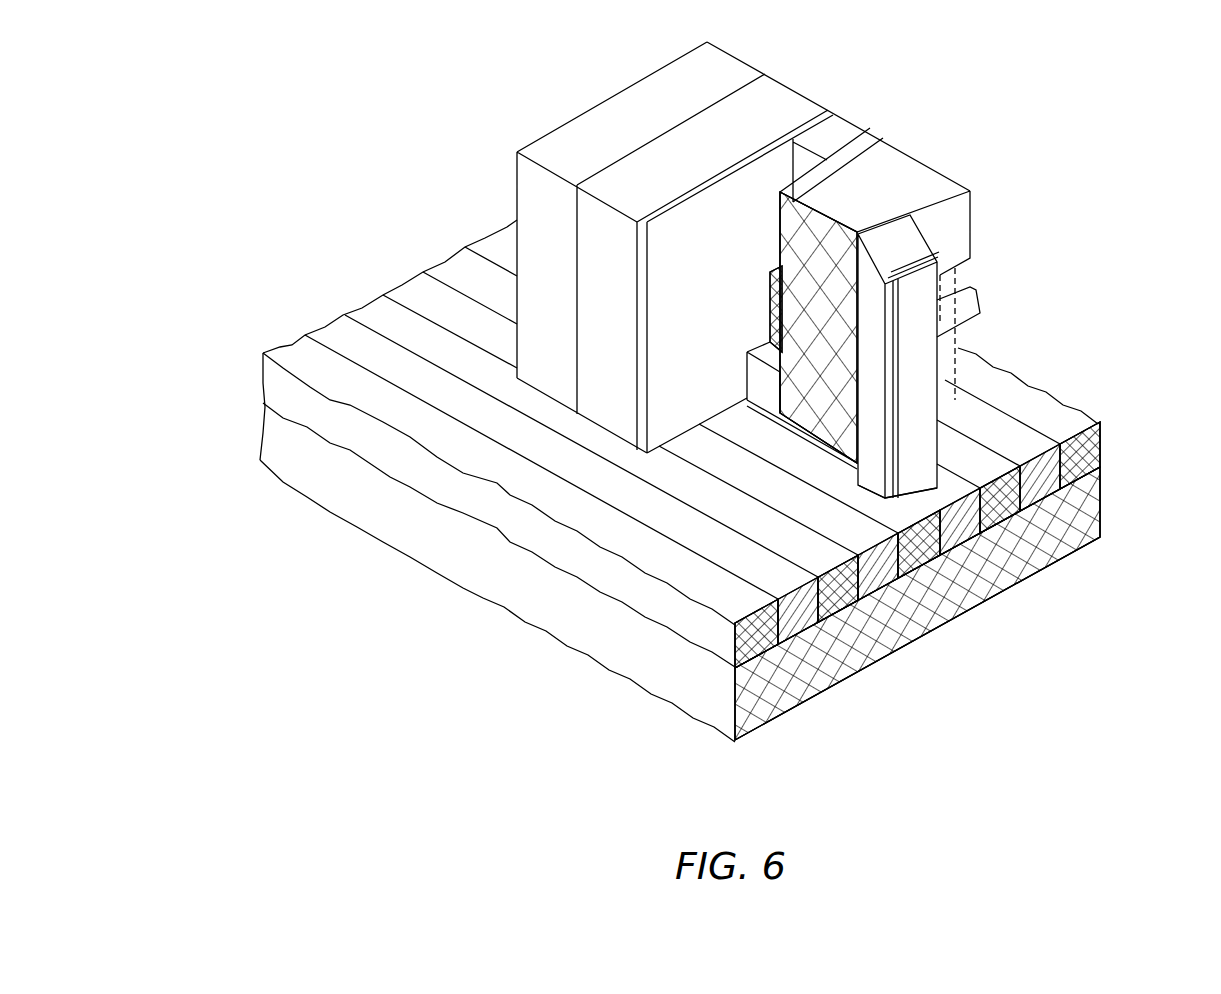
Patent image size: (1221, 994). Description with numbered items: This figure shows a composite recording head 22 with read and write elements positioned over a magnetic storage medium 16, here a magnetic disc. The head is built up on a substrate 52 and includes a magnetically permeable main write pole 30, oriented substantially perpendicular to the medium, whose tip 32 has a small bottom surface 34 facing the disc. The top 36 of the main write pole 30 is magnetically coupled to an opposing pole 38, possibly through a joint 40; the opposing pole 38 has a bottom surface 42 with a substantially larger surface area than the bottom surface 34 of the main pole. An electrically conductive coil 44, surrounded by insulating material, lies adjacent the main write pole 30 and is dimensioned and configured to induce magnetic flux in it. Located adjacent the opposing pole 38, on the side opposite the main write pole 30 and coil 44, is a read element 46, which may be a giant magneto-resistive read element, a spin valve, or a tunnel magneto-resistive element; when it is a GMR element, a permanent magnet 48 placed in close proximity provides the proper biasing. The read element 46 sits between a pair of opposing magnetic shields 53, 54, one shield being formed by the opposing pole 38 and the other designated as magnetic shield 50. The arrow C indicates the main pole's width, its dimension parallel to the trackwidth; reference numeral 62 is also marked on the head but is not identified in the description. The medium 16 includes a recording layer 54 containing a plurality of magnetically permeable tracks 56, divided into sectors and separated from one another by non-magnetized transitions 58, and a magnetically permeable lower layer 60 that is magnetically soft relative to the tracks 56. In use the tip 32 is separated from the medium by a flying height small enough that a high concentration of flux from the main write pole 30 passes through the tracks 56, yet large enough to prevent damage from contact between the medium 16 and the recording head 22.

The magnetic storage medium 16 is at (806, 718).
The recording head 22 is at (958, 86).
The main write pole 30 is at (935, 377).
The tip 32 is at (972, 478).
The bottom surface 34 is at (890, 509).
The top 36 is at (906, 370).
The opposing pole 38 is at (880, 206).
The joint 40 is at (965, 250).
The bottom surface 42 is at (820, 437).
The electrically conductive coil 44 is at (975, 295).
The read element 46 is at (750, 380).
The permanent magnet 48 is at (770, 322).
The magnetic shield 50 is at (700, 177).
The substrate 52 is at (648, 130).
The magnetic shield 53 is at (818, 103).
The recording layer 54 is at (1110, 430).
The magnetically permeable tracks 56 is at (1043, 405).
The non-magnetized transitions 58 is at (990, 392).
The lower layer 60 is at (1110, 512).
The block assembly 62 is at (900, 132).
The width C is at (990, 462).